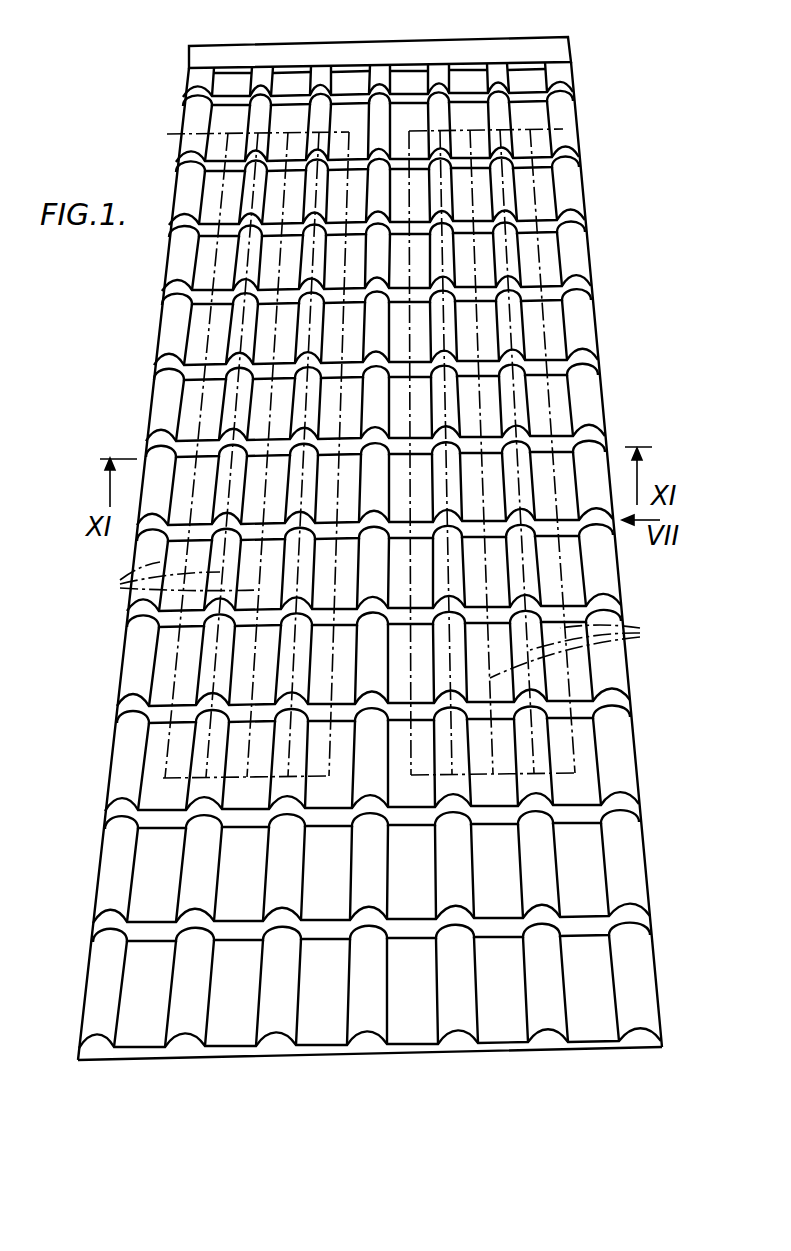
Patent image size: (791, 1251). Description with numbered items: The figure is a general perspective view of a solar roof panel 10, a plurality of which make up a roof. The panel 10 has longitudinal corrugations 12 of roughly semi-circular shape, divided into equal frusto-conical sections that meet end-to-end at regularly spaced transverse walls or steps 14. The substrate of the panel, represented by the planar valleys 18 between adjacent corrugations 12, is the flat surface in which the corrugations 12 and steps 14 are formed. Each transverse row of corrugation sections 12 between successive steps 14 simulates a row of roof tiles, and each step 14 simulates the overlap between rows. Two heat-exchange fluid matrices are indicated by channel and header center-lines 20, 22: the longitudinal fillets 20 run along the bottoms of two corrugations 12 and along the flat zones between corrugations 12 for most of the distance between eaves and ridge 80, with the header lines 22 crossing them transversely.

The panel 10 is at (614, 401).
The longitudinal corrugations 12 is at (307, 1033).
The transverse walls or steps 14 is at (214, 100).
The valleys 18 is at (347, 78).
The longitudinal fillets 20 is at (328, 780).
The header center-lines 22 is at (653, 766).
The ridge 80 is at (320, 44).